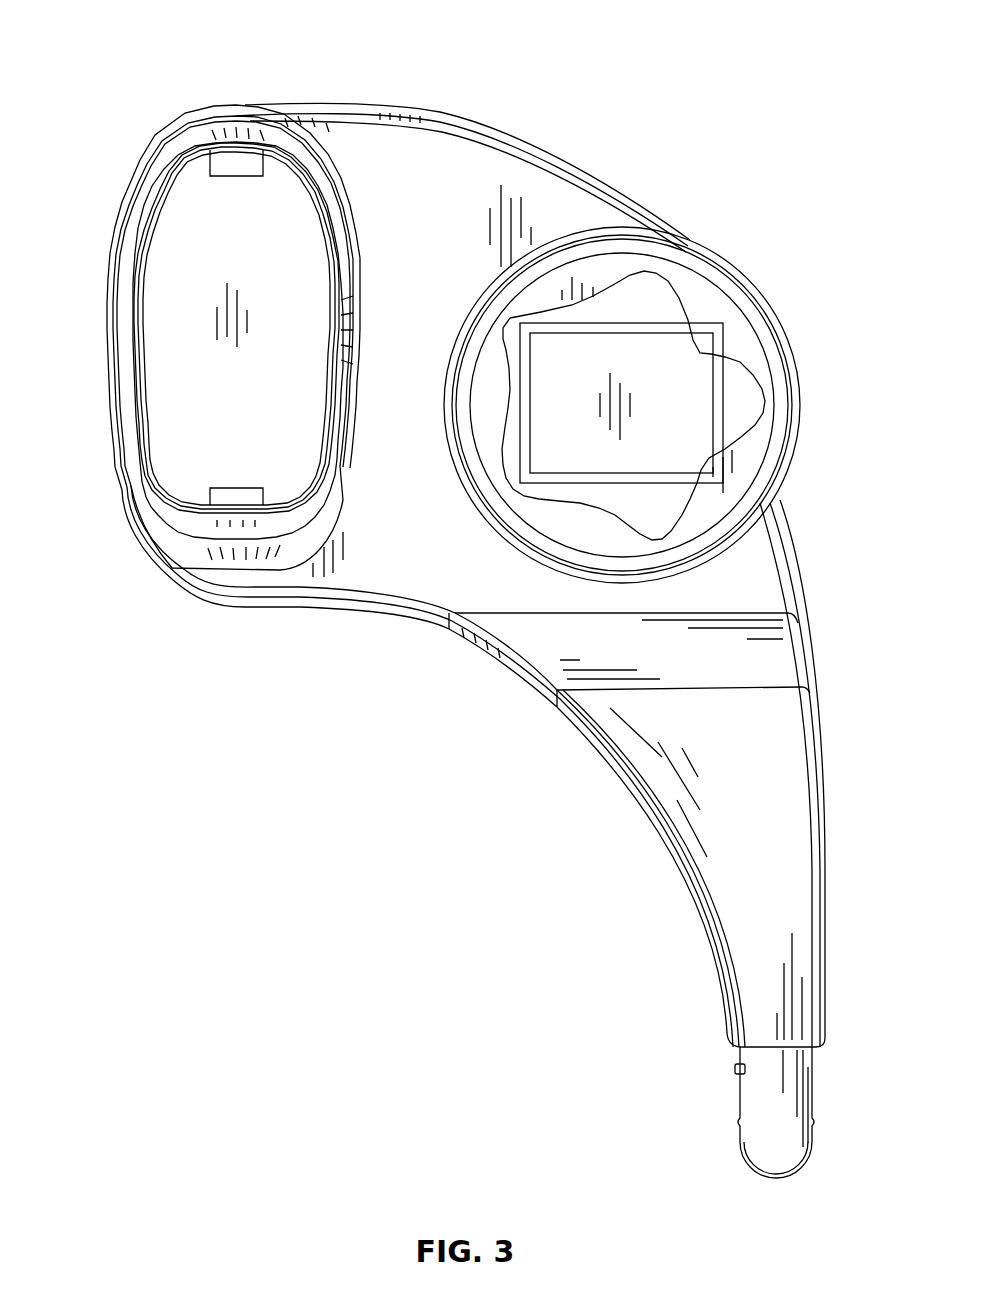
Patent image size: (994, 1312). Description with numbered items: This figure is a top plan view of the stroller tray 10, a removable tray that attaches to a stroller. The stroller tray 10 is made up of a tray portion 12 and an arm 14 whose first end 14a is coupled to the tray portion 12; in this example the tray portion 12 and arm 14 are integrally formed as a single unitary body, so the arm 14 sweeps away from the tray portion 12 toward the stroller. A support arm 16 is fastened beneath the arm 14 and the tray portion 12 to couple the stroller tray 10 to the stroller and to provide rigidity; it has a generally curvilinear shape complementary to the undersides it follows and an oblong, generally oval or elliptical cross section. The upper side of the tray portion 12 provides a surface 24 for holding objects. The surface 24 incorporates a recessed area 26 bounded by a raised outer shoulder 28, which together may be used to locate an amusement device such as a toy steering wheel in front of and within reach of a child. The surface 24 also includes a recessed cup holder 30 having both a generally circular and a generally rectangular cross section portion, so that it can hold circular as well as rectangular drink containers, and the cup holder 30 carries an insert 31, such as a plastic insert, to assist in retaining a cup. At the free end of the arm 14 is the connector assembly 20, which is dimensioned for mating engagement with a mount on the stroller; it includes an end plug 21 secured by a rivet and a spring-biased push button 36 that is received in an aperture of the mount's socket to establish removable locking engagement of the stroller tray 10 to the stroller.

The stroller tray 10 is at (618, 56).
The tray portion 12 is at (496, 153).
The arm 14 is at (796, 905).
The first end 14a is at (503, 627).
The support arm 16 is at (803, 1075).
The connector assembly 20 is at (748, 1138).
The end plug 21 is at (790, 1175).
The surface 24 is at (355, 130).
The recessed area 26 is at (183, 385).
The raised outer shoulder 28 is at (130, 285).
The recessed cup holder 30 is at (688, 377).
The insert 31 is at (748, 368).
The spring-biased push button 36 is at (735, 1068).